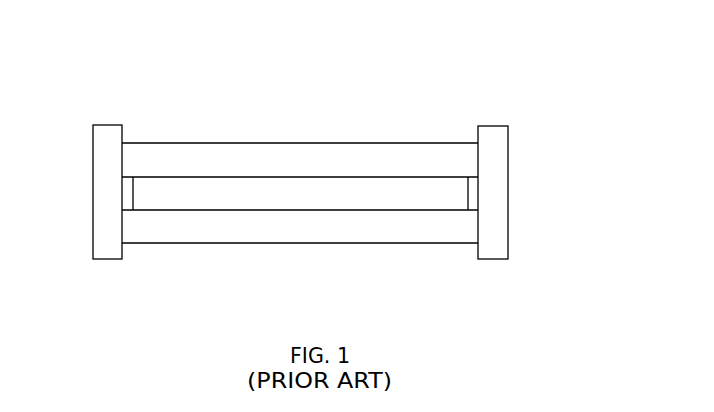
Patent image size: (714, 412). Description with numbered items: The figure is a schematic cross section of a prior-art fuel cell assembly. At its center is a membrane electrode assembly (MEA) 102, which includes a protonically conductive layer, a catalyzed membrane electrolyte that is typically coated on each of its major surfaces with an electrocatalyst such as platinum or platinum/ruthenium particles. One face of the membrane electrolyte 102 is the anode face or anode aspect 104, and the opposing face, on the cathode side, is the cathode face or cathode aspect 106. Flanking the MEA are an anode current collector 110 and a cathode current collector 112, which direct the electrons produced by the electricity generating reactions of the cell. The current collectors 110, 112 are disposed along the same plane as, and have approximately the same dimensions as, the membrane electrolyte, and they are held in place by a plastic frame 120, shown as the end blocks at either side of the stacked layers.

The membrane electrode assembly 102 is at (167, 197).
The anode aspect 104 is at (205, 179).
The cathode aspect 106 is at (360, 210).
The anode current collector 110 is at (348, 143).
The cathode current collector 112 is at (181, 244).
The plastic frame 120 is at (492, 259).